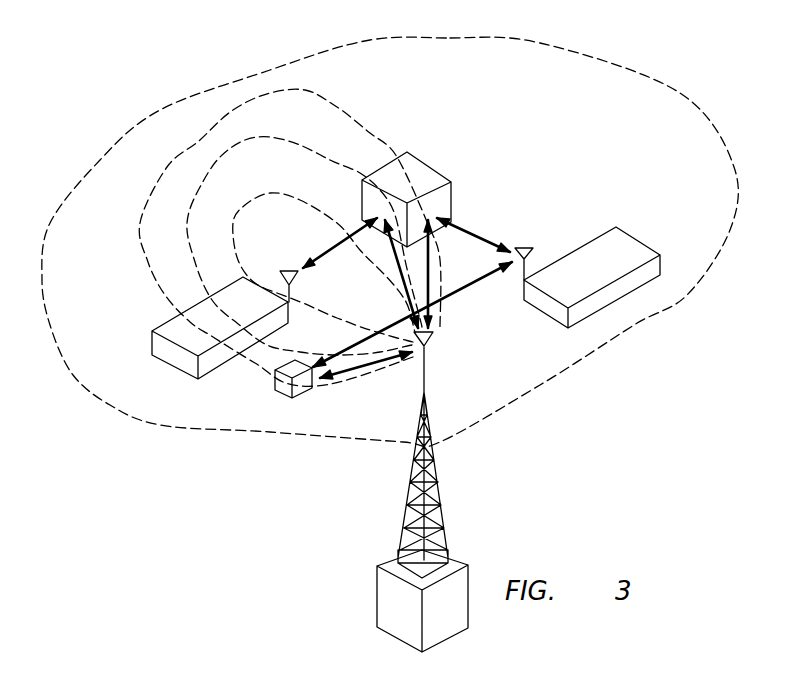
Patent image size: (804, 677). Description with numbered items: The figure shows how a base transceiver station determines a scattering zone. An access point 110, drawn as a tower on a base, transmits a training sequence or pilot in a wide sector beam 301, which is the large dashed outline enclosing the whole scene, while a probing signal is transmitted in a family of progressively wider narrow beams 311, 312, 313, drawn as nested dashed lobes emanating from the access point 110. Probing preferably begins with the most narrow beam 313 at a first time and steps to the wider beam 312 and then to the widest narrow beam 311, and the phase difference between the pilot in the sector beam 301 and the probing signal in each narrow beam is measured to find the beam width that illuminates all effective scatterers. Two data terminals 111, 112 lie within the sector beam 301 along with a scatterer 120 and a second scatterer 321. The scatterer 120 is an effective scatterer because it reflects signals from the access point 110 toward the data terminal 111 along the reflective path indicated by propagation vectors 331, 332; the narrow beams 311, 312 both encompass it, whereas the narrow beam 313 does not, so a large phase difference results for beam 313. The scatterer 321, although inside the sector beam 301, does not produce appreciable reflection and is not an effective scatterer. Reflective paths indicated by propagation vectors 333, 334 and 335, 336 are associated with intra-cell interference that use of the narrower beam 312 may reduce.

The sector beam 301 is at (270, 70).
The narrow beam 311 is at (337, 107).
The narrow beam 312 is at (220, 157).
The narrow beam 313 is at (265, 193).
The access point 110 is at (377, 597).
The data terminal 111 is at (152, 331).
The data terminal 112 is at (640, 238).
The scatterer 120 is at (426, 164).
The scatterer 321 is at (278, 384).
The propagation vector 331 is at (402, 290).
The propagation vector 332 is at (320, 256).
The propagation vector 333 is at (437, 250).
The propagation vector 334 is at (480, 238).
The propagation vector 335 is at (352, 373).
The propagation vector 336 is at (460, 290).